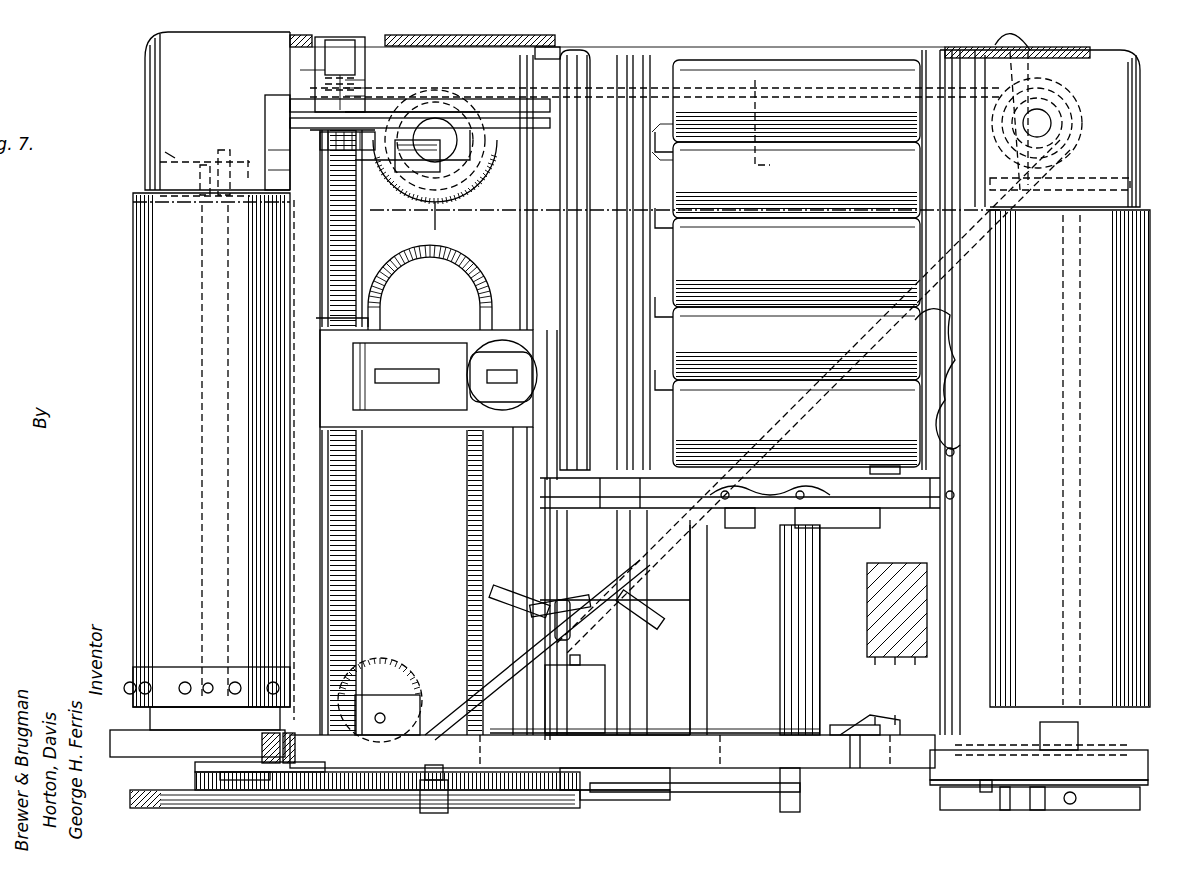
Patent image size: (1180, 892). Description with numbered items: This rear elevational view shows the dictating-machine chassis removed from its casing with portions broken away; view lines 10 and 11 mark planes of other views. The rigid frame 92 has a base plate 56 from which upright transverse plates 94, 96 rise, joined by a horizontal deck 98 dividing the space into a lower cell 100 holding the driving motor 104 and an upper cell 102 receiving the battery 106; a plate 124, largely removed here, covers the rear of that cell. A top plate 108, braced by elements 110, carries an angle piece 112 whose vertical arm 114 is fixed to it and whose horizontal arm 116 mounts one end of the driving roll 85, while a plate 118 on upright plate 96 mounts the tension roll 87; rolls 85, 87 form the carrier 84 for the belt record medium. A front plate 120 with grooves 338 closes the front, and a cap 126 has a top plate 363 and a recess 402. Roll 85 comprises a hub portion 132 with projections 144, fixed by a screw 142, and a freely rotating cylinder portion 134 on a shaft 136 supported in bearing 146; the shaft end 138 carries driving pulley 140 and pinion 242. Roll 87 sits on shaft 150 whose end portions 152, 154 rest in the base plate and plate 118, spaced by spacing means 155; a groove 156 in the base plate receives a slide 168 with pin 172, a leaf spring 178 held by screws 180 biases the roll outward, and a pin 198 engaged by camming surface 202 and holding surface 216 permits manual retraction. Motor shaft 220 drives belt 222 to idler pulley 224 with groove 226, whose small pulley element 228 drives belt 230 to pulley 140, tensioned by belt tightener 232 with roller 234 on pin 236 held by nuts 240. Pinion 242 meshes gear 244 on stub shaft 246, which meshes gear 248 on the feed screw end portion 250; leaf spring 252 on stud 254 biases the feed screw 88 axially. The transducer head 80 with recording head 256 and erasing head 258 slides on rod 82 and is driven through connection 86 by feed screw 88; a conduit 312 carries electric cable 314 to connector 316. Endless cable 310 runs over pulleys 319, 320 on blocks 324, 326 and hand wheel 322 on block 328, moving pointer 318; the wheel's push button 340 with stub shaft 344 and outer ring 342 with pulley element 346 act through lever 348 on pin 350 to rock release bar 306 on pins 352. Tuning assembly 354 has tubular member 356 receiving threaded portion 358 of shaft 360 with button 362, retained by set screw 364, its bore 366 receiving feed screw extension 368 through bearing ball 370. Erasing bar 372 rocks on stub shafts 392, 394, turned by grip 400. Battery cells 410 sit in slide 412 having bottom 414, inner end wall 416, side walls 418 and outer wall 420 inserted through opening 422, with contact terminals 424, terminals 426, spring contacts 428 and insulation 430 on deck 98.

The section line 10 is at (249, 424).
The section line 11 is at (919, 529).
The base plate 56 is at (855, 770).
The transducer head 80 is at (409, 440).
The rod 82 is at (515, 490).
The drivable carrier 84 is at (128, 251).
The driving roll 85 is at (135, 336).
The head-traversing drive connection 86 is at (358, 430).
The tension roll 87 is at (1148, 460).
The feed screw 88 is at (357, 580).
The frame 92 is at (1137, 740).
The upright transverse plate 94 is at (548, 538).
The upright transverse plate 96 is at (940, 556).
The horizontal deck 98 is at (705, 510).
The lower recess or cell 100 is at (550, 636).
The upper recess or cell 102 is at (560, 250).
The driving motor 104 is at (690, 653).
The battery 106 is at (585, 265).
The top plate 108 is at (552, 125).
The braces 110 is at (552, 105).
The angle piece 112 is at (165, 160).
The vertical arm 114 is at (280, 150).
The horizontal arm 116 is at (150, 192).
The arm or plate 118 is at (1130, 195).
The front plate 120 is at (852, 695).
The plate 124 is at (920, 343).
The cap 126 is at (145, 71).
The hub portion 132 is at (140, 705).
The cylinder portion 134 is at (150, 600).
The shaft 136 is at (200, 540).
The end portion 138 is at (195, 777).
The driving pulley 140 is at (135, 805).
The screw 142 is at (205, 735).
The projections 144 is at (185, 682).
The bearing 146 is at (195, 205).
The shaft 150 is at (1063, 438).
The end portion 152 is at (1040, 742).
The end portion 154 is at (1060, 212).
The spacing means 155 is at (1080, 735).
The recess or groove 156 is at (1122, 780).
The slide 168 is at (1090, 190).
The pin 172 is at (985, 790).
The leaf spring 178 is at (960, 340).
The screws 180 is at (950, 453).
The pin 198 is at (1008, 812).
The camming surface 202 is at (1040, 812).
The holding surface 216 is at (1060, 805).
The drive shaft 220 is at (773, 817).
The belt 222 is at (710, 795).
The idler pulley 224 is at (640, 800).
The groove 226 is at (645, 768).
The pulley element 228 is at (580, 810).
The belt 230 is at (360, 800).
The belt tightener 232 is at (445, 819).
The roller 234 is at (432, 812).
The pin 236 is at (394, 718).
The nuts 240 is at (432, 740).
The pinion 242 is at (195, 766).
The gear 244 is at (240, 768).
The stub shaft 246 is at (240, 790).
The gear 248 is at (342, 760).
The end shaft portion 250 is at (280, 790).
The leaf spring 252 is at (315, 790).
The pin or stud 254 is at (448, 785).
The recording head member 256 is at (392, 343).
The erasing head member 258 is at (490, 360).
The release bar 306 is at (300, 358).
The flexible cable 310 is at (855, 95).
The flexible conduit 312 is at (470, 521).
The electric cable 314 is at (730, 733).
The connector portion 316 is at (900, 733).
The pointer 318 is at (765, 165).
The pulley 319 is at (372, 680).
The pulley 320 is at (1068, 110).
The hand wheel 322 is at (473, 230).
The bracket or block 324 is at (400, 680).
The bracket or block 326 is at (945, 120).
The block 328 is at (400, 200).
The grooves 338 is at (495, 660).
The central push button member 340 is at (455, 125).
The outer ring 342 is at (450, 222).
The stub shaft 344 is at (417, 156).
The pulley element 346 is at (480, 205).
The lever 348 is at (365, 180).
The pin 350 is at (360, 165).
The pins or studs 352 is at (280, 135).
The assembly 354 is at (450, 53).
The tubular member 356 is at (300, 115).
The threaded end portion 358 is at (325, 85).
The shaft 360 is at (370, 70).
The button 362 is at (315, 50).
The top plate of cap 363 is at (555, 50).
The set screw 364 is at (305, 70).
The bore 366 is at (331, 138).
The reduced diameter extension 368 is at (340, 158).
The bearing ball 370 is at (372, 92).
The magnetic erasing bar 372 is at (1005, 368).
The stub shaft 392 is at (935, 163).
The stub shaft 394 is at (955, 756).
The butterfly grip element 400 is at (930, 60).
The recess 402 is at (1032, 58).
The cells 410 is at (592, 357).
The slide 412 is at (818, 45).
The bottom member 414 is at (680, 470).
The inner end wall 416 is at (835, 508).
The side walls 418 is at (562, 282).
The outer wall 420 is at (715, 45).
The opening 422 is at (575, 55).
The contact terminal elements 424 is at (673, 236).
The terminal elements 426 is at (880, 468).
The spring contact terminal elements 428 is at (720, 490).
The insulation material 430 is at (775, 508).